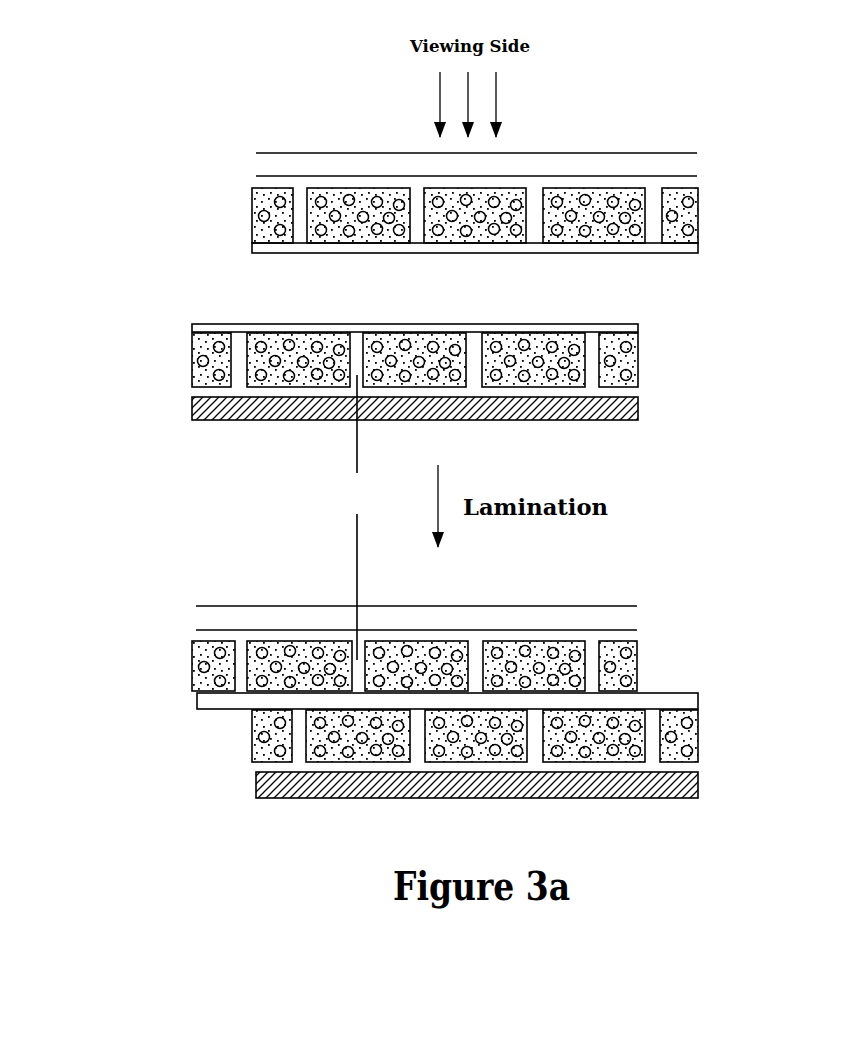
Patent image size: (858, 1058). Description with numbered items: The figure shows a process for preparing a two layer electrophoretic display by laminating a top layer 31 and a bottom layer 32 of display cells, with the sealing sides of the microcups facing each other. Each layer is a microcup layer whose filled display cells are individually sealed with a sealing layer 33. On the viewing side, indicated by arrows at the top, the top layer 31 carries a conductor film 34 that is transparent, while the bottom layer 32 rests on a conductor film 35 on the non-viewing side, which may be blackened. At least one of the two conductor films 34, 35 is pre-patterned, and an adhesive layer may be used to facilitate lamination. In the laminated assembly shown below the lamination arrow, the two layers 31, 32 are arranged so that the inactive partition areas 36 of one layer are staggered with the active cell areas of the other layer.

The top layer 31 is at (738, 212).
The bottom layer 32 is at (670, 368).
The sealing layer 33 is at (252, 250).
The conductor film 34 is at (302, 158).
The conductor film 35 is at (192, 413).
The inactive partition areas 36 is at (363, 517).